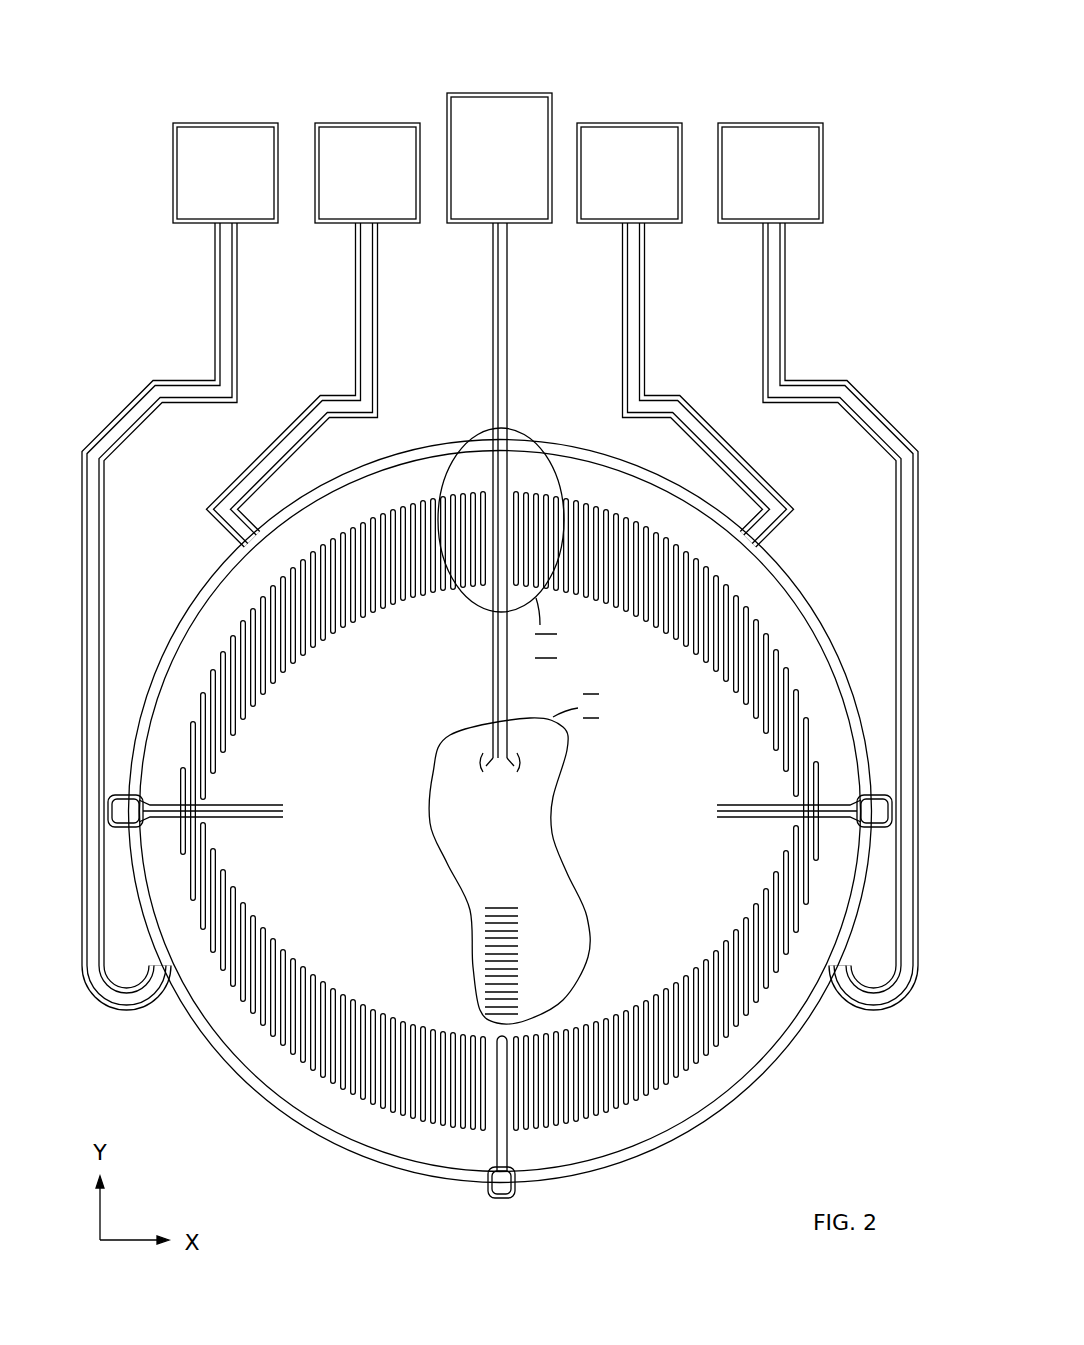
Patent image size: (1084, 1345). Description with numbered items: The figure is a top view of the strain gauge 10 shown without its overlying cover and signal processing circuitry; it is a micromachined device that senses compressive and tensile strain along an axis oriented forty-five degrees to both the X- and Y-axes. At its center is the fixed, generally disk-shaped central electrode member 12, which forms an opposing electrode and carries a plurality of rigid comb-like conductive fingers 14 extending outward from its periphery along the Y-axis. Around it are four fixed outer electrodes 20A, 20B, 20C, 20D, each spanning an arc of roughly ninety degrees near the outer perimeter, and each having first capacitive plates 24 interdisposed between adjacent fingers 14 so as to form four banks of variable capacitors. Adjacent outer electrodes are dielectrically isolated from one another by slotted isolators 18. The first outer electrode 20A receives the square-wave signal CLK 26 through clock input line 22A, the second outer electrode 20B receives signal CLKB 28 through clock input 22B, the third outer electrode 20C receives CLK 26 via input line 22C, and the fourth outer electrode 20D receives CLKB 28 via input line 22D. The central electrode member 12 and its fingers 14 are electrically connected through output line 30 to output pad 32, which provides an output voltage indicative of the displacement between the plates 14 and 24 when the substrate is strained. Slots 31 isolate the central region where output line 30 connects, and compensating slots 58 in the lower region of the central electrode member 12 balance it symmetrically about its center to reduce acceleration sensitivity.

The strain gauge 10 is at (497, 626).
The central electrode member 12 is at (634, 884).
The conductive plates (fingers) 14 is at (295, 672).
The isolator 18 is at (125, 812).
The first outer electrode 20A is at (212, 606).
The second outer electrode 20B is at (778, 582).
The third outer electrode 20C is at (752, 1058).
The fourth outer electrode 20D is at (320, 1132).
The clock input line 22A is at (262, 484).
The clock input 22B is at (724, 462).
The input line 22C is at (864, 1000).
The input line 22D is at (126, 1000).
The first capacitive plates (fingers) 24 is at (255, 606).
The signal CLK 26 is at (375, 122).
The signal CLKB 28 is at (233, 122).
The output line 30 is at (508, 260).
The slots 31 is at (506, 748).
The output pad 32 is at (505, 92).
The slots 58 is at (505, 945).